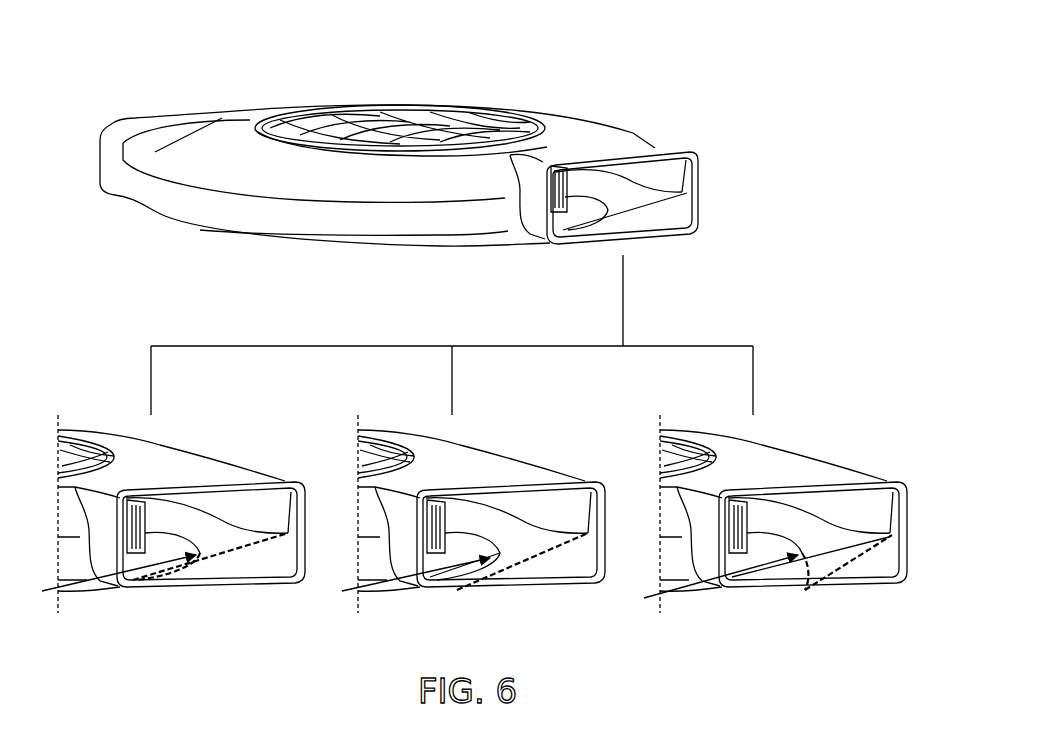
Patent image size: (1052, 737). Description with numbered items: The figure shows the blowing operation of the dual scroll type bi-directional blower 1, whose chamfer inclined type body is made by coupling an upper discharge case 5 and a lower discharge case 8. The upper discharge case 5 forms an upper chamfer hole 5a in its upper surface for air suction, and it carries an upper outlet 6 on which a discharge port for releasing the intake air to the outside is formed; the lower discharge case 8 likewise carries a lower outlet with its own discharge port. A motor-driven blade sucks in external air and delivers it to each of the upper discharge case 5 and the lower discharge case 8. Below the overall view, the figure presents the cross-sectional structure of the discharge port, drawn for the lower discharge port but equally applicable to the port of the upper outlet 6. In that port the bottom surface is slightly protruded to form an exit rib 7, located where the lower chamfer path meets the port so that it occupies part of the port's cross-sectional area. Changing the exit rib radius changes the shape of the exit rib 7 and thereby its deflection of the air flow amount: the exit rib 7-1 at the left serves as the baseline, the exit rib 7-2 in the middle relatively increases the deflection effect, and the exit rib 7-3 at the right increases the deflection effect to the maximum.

The bi-directional blower 1 is at (432, 167).
The upper discharge case 5 is at (252, 120).
The upper chamfer hole 5a is at (345, 108).
The upper outlet 6 is at (197, 113).
The exit rib 7 is at (567, 223).
The exit rib 7-1 is at (177, 537).
The exit rib 7-2 is at (509, 491).
The exit rib 7-3 is at (812, 491).
The lower discharge case 8 is at (383, 220).